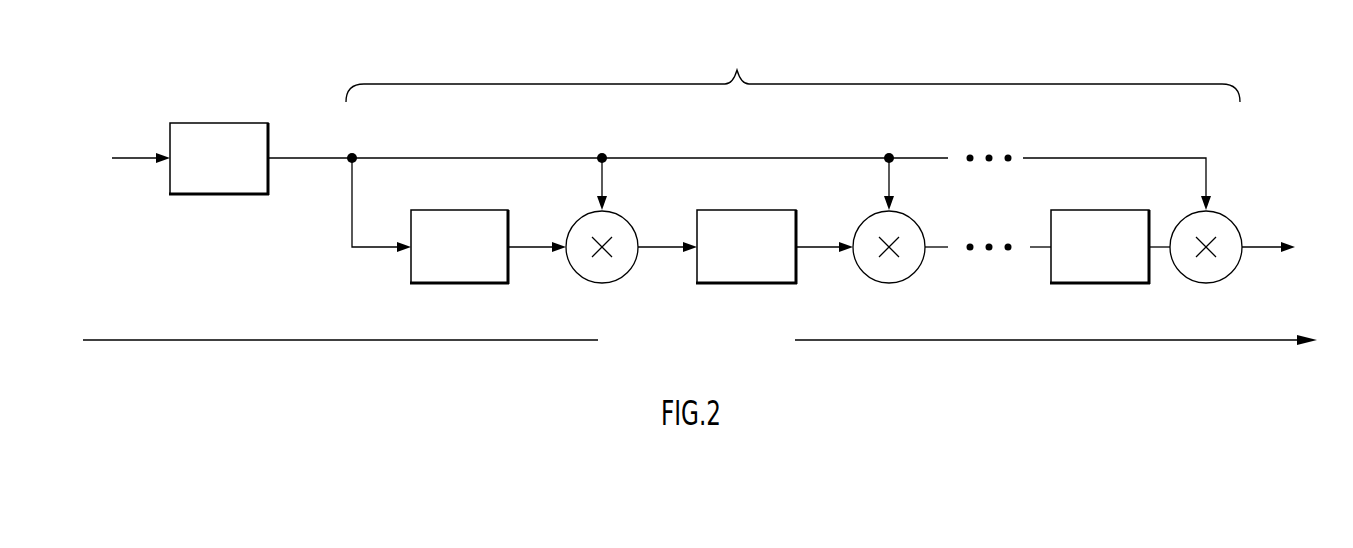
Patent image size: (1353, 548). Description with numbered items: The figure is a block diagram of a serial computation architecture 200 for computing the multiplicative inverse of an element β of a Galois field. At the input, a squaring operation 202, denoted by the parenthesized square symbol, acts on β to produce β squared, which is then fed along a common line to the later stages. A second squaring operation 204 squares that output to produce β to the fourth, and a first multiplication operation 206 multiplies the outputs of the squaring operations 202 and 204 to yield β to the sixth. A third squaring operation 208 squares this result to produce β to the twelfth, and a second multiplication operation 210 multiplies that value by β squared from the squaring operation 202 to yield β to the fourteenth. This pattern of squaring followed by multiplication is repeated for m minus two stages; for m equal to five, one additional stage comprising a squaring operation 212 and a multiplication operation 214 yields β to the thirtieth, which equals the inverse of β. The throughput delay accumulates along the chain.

The serial computation architecture 200 is at (1228, 42).
The squaring operation 202 is at (221, 122).
The second squaring operation 204 is at (460, 209).
The first multiplication operation 206 is at (628, 219).
The third squaring operation 208 is at (748, 209).
The second multiplication operation 210 is at (915, 219).
The squaring operation 212 is at (1101, 209).
The multiplication operation 214 is at (1232, 221).